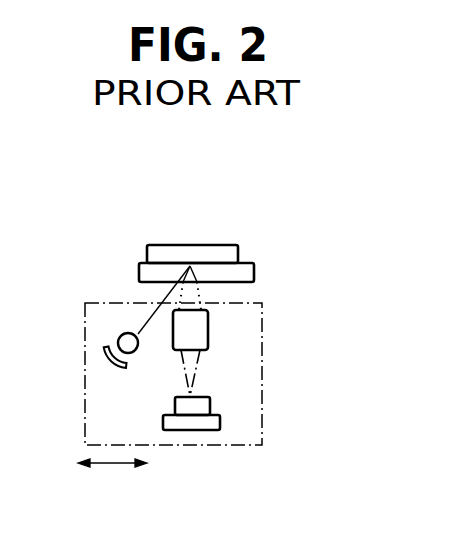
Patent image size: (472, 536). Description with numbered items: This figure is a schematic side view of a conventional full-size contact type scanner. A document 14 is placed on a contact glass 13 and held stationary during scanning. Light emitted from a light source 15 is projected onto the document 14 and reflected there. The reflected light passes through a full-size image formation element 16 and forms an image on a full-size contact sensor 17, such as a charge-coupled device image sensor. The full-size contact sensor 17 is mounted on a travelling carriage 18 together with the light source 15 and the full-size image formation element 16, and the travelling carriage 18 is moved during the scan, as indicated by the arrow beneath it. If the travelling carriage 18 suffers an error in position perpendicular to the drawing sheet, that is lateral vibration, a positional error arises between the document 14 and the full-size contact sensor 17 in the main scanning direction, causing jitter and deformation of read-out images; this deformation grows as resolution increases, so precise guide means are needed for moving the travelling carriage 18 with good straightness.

The contact glass 13 is at (251, 266).
The document 14 is at (205, 249).
The light source 15 is at (125, 332).
The full-size image formation element 16 is at (200, 326).
The full-size contact sensor 17 is at (209, 404).
The travelling carriage 18 is at (264, 432).